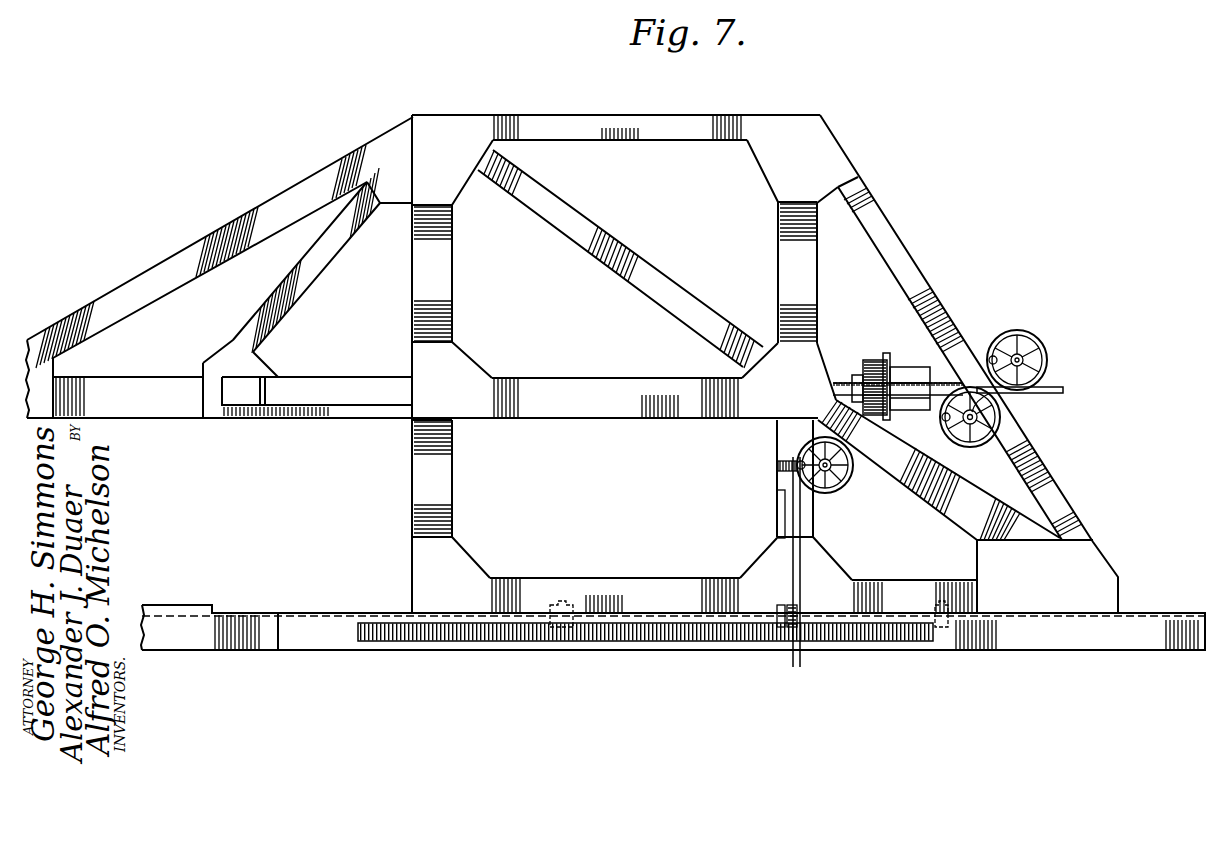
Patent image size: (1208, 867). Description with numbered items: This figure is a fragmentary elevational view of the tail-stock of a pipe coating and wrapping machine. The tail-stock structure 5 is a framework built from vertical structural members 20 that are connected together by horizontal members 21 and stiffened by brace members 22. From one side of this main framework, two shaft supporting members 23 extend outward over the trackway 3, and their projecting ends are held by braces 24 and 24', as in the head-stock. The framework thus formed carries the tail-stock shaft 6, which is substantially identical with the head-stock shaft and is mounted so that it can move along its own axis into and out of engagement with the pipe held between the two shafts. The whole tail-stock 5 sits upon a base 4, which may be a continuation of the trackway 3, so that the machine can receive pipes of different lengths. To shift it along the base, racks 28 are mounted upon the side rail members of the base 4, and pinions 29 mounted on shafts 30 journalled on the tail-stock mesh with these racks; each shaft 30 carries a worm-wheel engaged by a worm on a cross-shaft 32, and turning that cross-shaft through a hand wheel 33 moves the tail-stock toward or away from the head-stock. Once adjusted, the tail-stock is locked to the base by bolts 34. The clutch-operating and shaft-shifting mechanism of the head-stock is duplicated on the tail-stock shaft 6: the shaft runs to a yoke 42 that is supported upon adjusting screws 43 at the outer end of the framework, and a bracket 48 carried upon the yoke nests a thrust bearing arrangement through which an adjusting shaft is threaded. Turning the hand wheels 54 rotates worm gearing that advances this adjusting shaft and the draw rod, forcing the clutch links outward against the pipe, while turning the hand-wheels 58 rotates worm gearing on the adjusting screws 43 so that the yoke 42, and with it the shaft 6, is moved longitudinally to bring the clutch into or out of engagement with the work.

The trackway 3 is at (207, 637).
The base 4 is at (320, 627).
The tail-stock structure 5 is at (755, 116).
The tail-stock shaft 6 is at (835, 380).
The vertical structural members 20 is at (450, 287).
The horizontal members 21 is at (562, 114).
The brace members 22 is at (905, 253).
The shaft supporting members 23 is at (160, 418).
The brace 24 is at (219, 267).
The brace 24' is at (292, 293).
The racks 28 is at (515, 648).
The pinions 29 is at (795, 668).
The shafts 30 is at (790, 553).
The cross-shaft 32 is at (840, 488).
The hand wheel 33 is at (797, 443).
The bolts 34 is at (549, 604).
The yoke 42 is at (877, 360).
The adjusting screws 43 is at (934, 408).
The bracket 48 is at (910, 372).
The hand wheels 54 is at (1000, 421).
The hand-wheels 58 is at (1040, 345).